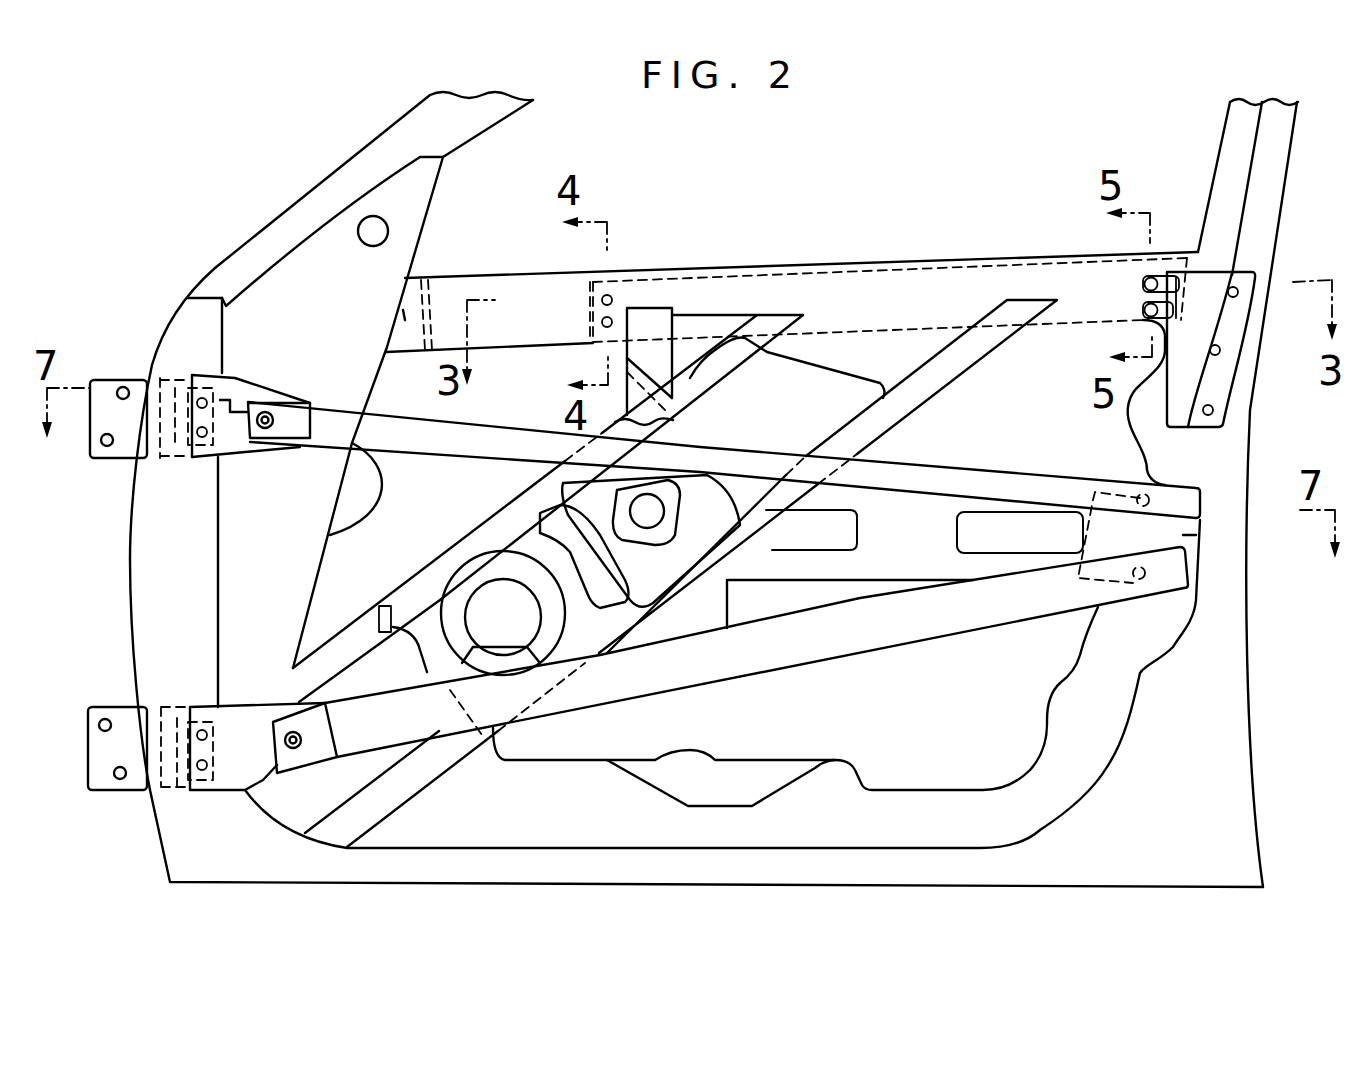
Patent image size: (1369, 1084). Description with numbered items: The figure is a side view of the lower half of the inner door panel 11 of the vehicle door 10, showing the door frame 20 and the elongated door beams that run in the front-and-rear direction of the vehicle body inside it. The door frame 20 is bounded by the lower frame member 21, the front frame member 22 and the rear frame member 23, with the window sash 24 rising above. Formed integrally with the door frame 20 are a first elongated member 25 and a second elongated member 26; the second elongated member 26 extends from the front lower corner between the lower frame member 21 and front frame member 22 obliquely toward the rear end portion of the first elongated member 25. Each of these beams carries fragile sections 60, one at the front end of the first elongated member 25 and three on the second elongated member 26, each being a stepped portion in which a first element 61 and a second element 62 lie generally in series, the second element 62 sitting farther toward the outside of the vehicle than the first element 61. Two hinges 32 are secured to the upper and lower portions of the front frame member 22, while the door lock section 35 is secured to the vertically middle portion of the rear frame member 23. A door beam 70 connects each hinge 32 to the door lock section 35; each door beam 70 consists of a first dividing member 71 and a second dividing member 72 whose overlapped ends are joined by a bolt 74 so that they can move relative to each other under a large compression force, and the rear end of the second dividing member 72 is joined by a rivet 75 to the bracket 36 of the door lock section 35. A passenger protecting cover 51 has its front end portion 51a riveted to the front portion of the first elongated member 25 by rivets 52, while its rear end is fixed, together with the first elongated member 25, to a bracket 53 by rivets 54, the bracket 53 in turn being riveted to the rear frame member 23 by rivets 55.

The vehicle door 10 is at (993, 136).
The inner door panel 11 is at (944, 202).
The door frame 20 is at (851, 897).
The lower frame member 21 is at (662, 870).
The front frame member 22 is at (142, 548).
The rear frame member 23 is at (1222, 712).
The window sash 24 is at (400, 133).
The first elongated member 25 is at (512, 293).
The second elongated member 26 is at (495, 527).
The hinge 32 is at (108, 380).
The door lock section 35 is at (1183, 535).
The bracket 36 is at (1265, 578).
The passenger protecting cover 51 is at (714, 276).
The front end portion 51a is at (587, 313).
The rivets 52 is at (613, 298).
The bracket 53 is at (1213, 383).
The rivets 54 is at (1143, 310).
The rivets 55 is at (1213, 411).
The fragile section 60 is at (436, 284).
The first element 61 is at (405, 315).
The second element 62 is at (890, 293).
The door beam 70 is at (923, 452).
The first dividing member 71 is at (213, 457).
The second dividing member 72 is at (328, 442).
The bolt 74 is at (264, 442).
The rivet 75 is at (1130, 495).